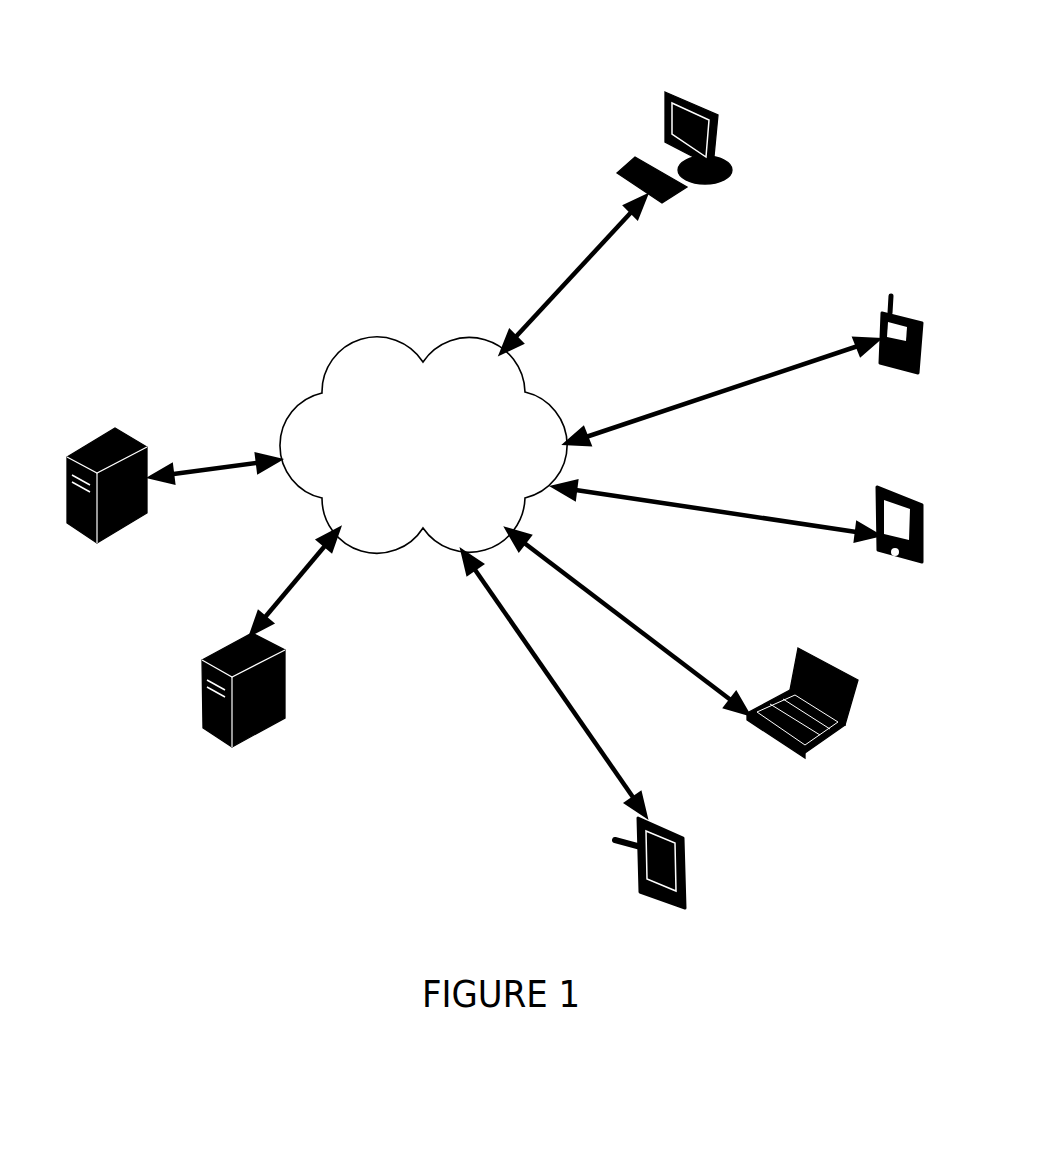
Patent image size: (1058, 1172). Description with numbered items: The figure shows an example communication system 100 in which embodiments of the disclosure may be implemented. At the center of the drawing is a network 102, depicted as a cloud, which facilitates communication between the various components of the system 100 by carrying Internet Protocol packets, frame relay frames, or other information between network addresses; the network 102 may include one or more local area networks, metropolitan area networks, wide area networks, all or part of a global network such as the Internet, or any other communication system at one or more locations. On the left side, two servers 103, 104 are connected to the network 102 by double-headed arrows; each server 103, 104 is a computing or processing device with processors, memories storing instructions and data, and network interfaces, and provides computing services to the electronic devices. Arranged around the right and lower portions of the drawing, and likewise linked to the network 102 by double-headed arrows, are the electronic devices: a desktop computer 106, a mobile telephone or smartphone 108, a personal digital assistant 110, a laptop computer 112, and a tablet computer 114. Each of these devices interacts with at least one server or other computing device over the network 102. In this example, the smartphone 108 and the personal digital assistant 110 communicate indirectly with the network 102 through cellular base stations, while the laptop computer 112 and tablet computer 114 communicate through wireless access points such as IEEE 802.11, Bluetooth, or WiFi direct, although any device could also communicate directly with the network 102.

The communication system 100 is at (236, 188).
The network 102 is at (327, 347).
The server 103 is at (218, 652).
The server 104 is at (77, 448).
The desktop computer 106 is at (665, 95).
The mobile telephone or smartphone 108 is at (922, 320).
The personal digital assistant (PDA) 110 is at (918, 497).
The laptop computer 112 is at (858, 690).
The tablet computer 114 is at (687, 857).